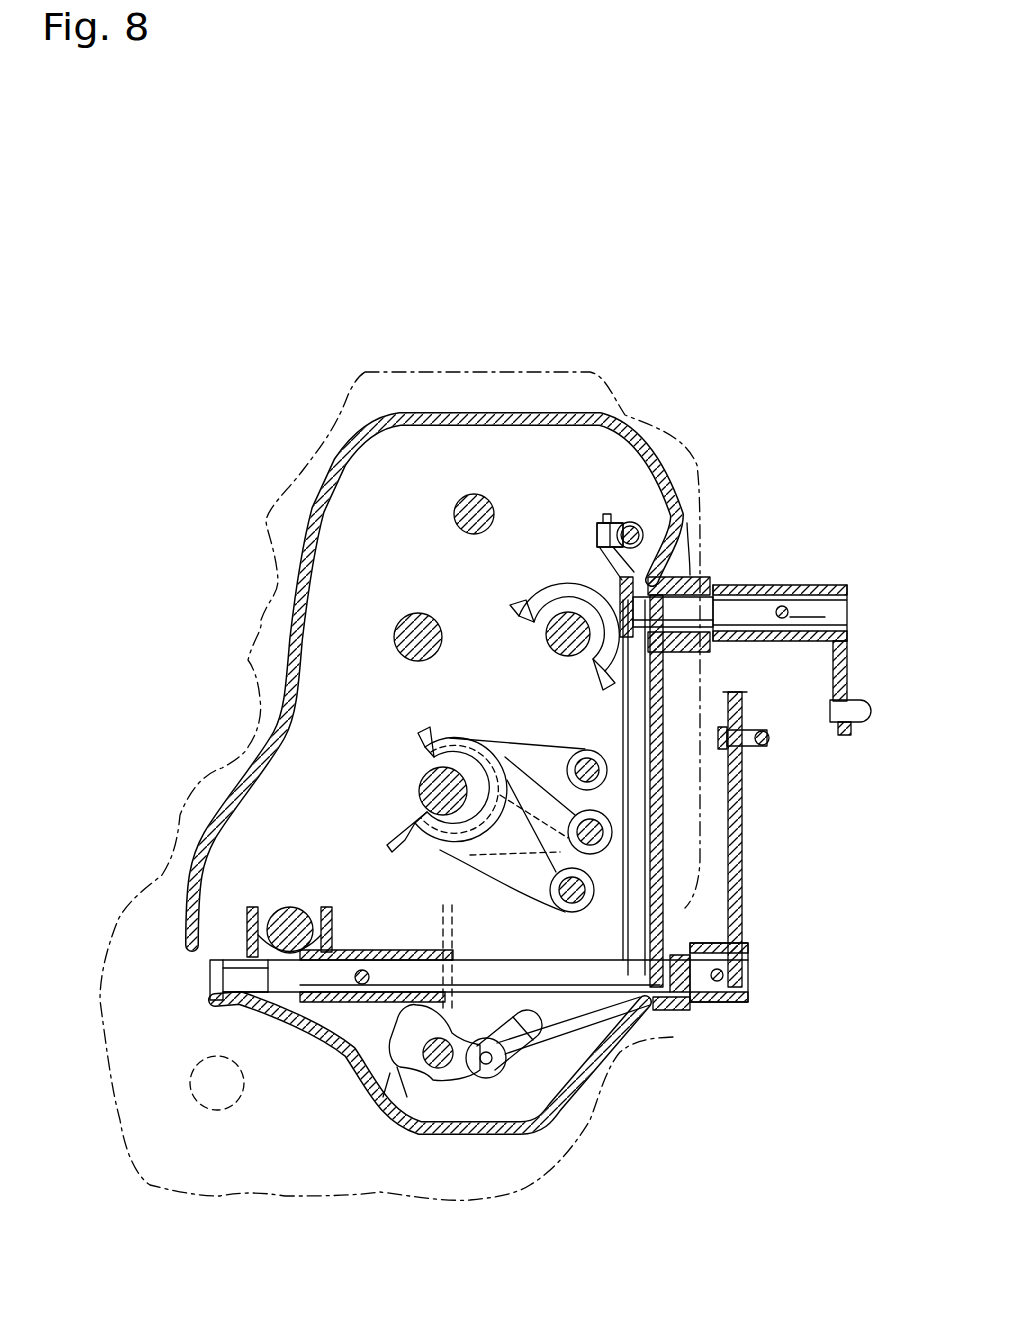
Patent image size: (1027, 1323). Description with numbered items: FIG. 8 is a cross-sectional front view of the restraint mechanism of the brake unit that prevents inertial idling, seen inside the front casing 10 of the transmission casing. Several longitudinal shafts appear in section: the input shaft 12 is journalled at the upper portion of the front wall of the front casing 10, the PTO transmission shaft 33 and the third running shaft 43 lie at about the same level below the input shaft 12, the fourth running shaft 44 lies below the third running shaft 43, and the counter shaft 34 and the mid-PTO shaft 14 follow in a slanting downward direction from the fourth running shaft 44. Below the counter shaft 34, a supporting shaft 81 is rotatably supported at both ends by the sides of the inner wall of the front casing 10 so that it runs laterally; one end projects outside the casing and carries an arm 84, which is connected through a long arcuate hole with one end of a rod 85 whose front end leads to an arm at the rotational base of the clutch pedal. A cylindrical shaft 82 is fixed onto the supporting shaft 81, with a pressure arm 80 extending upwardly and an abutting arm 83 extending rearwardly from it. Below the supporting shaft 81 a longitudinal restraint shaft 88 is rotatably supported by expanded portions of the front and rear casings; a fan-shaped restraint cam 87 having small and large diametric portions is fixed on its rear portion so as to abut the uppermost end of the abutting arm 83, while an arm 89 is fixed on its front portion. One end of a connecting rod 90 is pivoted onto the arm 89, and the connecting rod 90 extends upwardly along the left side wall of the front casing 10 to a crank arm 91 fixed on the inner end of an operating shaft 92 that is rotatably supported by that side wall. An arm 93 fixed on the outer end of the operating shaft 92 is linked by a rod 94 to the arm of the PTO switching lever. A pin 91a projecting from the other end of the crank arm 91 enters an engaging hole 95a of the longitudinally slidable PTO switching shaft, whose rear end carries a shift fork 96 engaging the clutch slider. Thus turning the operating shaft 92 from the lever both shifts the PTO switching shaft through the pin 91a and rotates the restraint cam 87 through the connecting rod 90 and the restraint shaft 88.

The front casing 10 is at (476, 412).
The input shaft 12 is at (456, 507).
The mid-PTO shaft 14 is at (210, 1056).
The PTO transmission shaft 33 is at (548, 652).
The counter shaft 34 is at (292, 906).
The third running shaft 43 is at (405, 622).
The fourth running shaft 44 is at (418, 785).
The pressure arm 80 is at (336, 930).
The supporting shaft 81 is at (665, 990).
The cylindrical shaft 82 is at (390, 958).
The abutting arm 83 is at (455, 962).
The arm 84 is at (743, 847).
The rod 85 is at (763, 747).
The restraint cam 87 is at (382, 1080).
The restraint shaft 88 is at (432, 1070).
The arm 89 is at (475, 1078).
The connecting rod 90 is at (582, 1035).
The crank arm 91 is at (603, 565).
The pin 91a is at (597, 532).
The operating shaft 92 is at (748, 612).
The arm 93 is at (848, 660).
The rod 94 is at (852, 725).
The engaging hole 95a is at (643, 577).
The shift fork 96 is at (523, 583).